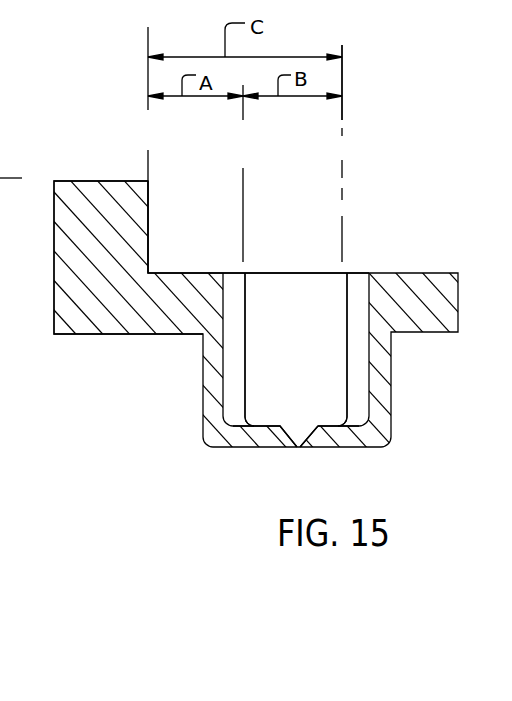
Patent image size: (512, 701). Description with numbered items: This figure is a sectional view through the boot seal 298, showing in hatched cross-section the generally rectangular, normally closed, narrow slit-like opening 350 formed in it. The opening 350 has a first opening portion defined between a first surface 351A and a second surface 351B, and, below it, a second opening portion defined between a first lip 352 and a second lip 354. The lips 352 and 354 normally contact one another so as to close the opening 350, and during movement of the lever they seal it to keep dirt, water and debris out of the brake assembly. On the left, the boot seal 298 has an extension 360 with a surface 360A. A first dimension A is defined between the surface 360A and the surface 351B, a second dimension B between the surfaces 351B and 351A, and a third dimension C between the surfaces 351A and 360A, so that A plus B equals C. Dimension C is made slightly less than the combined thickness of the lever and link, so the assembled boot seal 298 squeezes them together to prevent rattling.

The extension 360 is at (91, 195).
The surface 360A is at (148, 213).
The boot seal 298 is at (340, 160).
The opening 350 is at (313, 258).
The first surface 351A is at (345, 393).
The second surface 351B is at (250, 389).
The first lip 352 is at (257, 438).
The second lip 354 is at (349, 435).